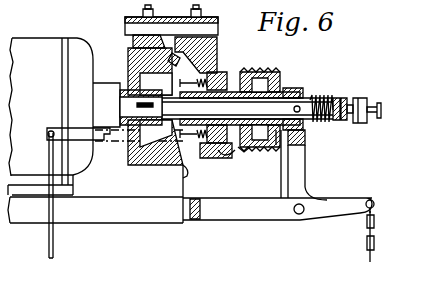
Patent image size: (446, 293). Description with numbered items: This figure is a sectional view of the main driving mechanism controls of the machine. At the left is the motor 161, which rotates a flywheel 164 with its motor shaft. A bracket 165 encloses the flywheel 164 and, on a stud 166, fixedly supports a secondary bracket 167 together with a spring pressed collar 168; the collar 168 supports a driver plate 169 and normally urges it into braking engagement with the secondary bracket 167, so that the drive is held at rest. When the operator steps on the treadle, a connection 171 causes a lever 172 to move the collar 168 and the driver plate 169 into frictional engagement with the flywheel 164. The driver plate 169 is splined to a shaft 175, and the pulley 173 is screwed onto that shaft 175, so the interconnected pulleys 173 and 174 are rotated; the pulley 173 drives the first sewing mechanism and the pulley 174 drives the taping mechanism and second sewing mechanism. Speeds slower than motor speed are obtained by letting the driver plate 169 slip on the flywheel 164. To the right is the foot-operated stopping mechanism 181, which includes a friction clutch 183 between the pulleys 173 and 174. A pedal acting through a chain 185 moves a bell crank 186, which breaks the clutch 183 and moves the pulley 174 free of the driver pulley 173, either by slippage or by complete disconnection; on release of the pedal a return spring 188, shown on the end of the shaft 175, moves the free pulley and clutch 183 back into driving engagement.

The motor 161 is at (50, 116).
The flywheel 164 is at (133, 62).
The bracket 165 is at (142, 188).
The stud 166 is at (218, 23).
The secondary bracket 167 is at (206, 55).
The spring pressed collar 168 is at (214, 72).
The driver plate 169 is at (186, 175).
The connection 171 is at (49, 240).
The lever 172 is at (90, 143).
The pulley 173 is at (242, 145).
The pulley 174 is at (277, 147).
The shaft 175 is at (287, 93).
The foot-operated stopping mechanism 181 is at (326, 156).
The friction clutch 183 is at (260, 143).
The chain 185 is at (363, 235).
The bell crank 186 is at (303, 178).
The spring 188 is at (325, 90).